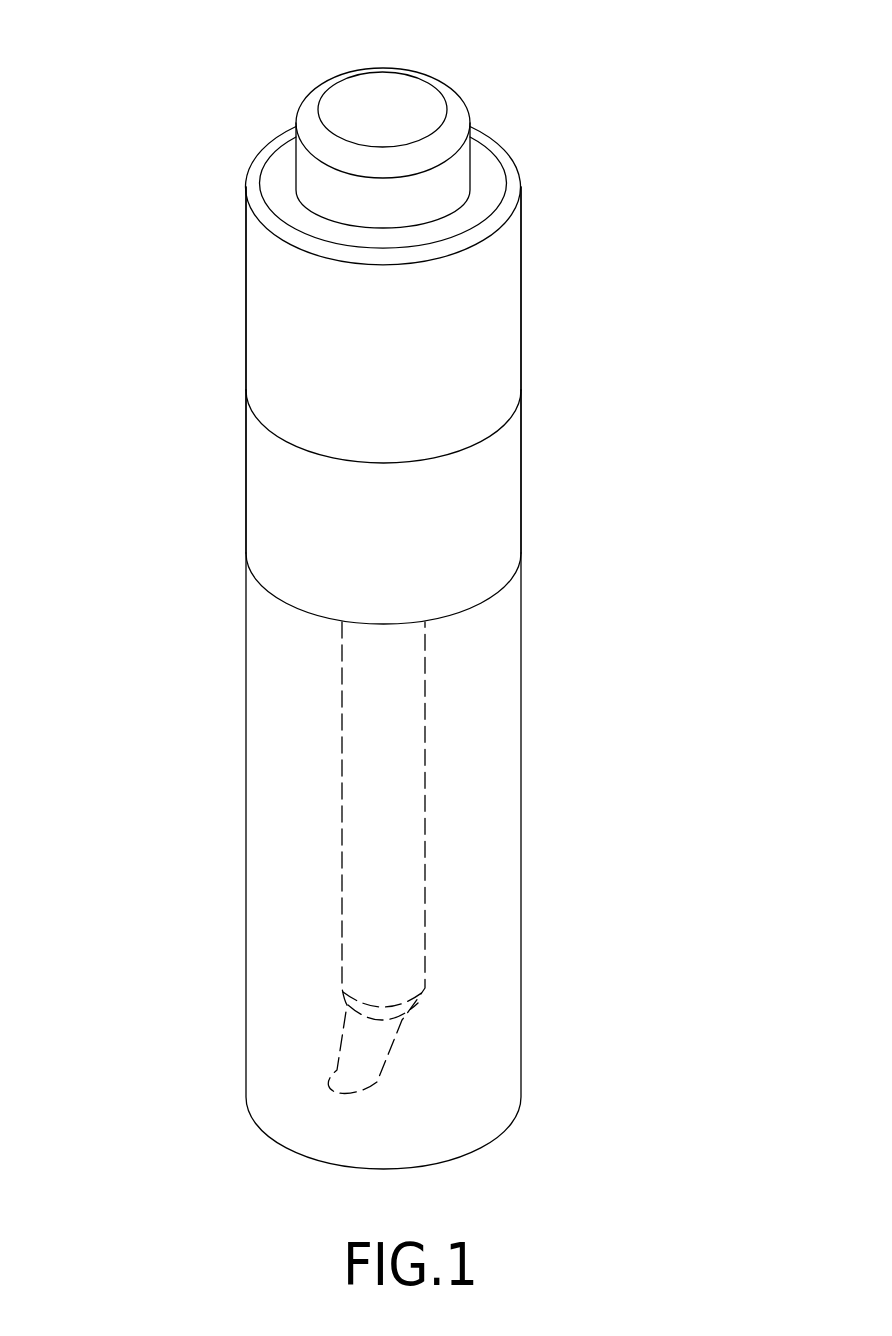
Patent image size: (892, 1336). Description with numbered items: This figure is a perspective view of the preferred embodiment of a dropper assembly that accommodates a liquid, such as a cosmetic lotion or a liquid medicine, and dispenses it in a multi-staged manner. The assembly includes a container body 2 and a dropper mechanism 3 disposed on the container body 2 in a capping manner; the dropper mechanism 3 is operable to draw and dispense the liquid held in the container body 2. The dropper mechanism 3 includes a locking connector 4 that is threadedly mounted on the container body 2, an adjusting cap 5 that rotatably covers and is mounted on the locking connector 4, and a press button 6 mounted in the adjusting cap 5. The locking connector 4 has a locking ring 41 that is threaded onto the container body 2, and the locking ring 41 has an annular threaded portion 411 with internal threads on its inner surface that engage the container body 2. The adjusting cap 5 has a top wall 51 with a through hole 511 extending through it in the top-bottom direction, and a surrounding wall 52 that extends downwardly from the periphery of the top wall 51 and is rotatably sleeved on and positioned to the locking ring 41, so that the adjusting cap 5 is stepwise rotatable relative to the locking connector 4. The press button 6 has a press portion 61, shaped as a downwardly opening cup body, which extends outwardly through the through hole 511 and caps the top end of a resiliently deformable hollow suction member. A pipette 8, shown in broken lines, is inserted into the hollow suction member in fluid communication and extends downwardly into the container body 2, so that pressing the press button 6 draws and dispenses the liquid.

The container body 2 is at (505, 848).
The dropper mechanism 3 is at (370, 312).
The locking connector 4 is at (440, 507).
The locking ring 41 is at (483, 462).
The annular threaded portion 411 is at (498, 552).
The adjusting cap 5 is at (314, 282).
The top wall 51 is at (293, 165).
The through hole 511 is at (300, 197).
The surrounding wall 52 is at (300, 376).
The press button 6 is at (449, 134).
The press portion 61 is at (457, 118).
The pipette 8 is at (420, 778).